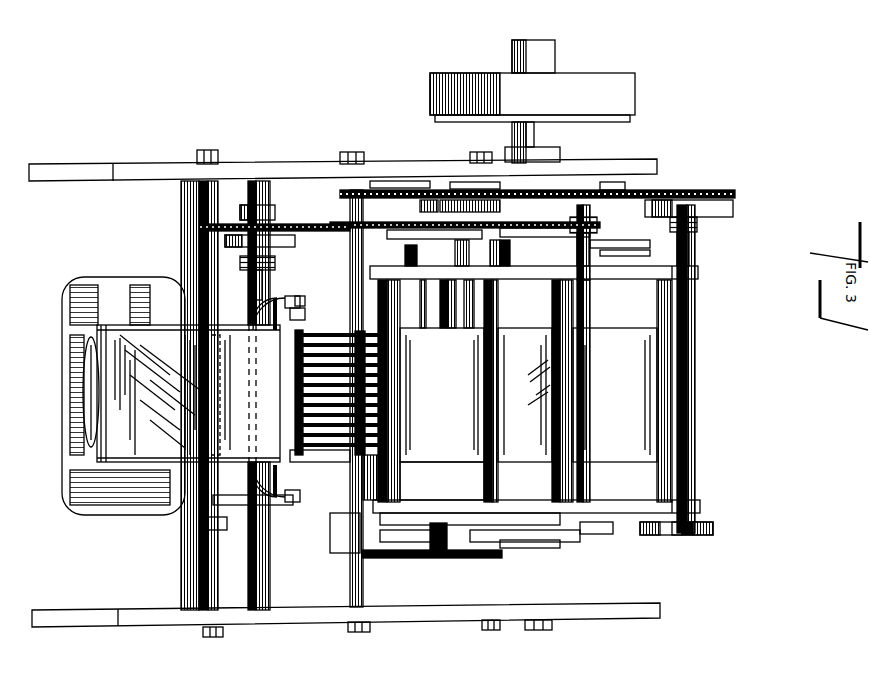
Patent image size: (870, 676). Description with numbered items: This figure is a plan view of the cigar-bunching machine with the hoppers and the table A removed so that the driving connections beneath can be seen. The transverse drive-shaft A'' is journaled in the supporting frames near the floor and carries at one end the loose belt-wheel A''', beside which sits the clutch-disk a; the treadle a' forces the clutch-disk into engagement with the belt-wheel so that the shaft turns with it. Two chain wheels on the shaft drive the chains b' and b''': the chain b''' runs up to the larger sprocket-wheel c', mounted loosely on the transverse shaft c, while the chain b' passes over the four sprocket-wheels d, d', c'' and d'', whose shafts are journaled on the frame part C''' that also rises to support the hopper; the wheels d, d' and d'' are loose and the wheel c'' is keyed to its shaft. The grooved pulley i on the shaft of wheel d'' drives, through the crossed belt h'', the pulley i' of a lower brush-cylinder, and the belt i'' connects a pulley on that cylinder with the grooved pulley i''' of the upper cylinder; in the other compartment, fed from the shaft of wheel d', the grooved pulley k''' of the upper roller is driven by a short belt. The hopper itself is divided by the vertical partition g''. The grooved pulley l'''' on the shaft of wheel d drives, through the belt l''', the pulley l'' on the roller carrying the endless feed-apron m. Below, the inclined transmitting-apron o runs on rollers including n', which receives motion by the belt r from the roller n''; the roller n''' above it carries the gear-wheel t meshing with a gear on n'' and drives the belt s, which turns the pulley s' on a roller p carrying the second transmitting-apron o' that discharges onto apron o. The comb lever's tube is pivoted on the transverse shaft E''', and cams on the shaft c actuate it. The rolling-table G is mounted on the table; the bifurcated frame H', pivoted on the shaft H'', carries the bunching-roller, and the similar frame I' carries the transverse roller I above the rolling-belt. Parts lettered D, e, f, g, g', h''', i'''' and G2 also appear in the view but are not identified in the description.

The table A is at (346, 624).
The transverse drive-shaft A'' is at (343, 364).
The loose belt-wheel A''' is at (532, 66).
The clutch-disk a is at (552, 132).
The treadle a' is at (123, 396).
The chain b' is at (527, 188).
The chain b''' is at (465, 237).
The transverse shaft c is at (267, 395).
The larger sprocket-wheel c' is at (275, 223).
The sprocket-wheel c'' is at (466, 170).
The frame part C''' is at (535, 389).
The sprocket-wheel d is at (537, 188).
The sprocket-wheel d' is at (521, 199).
The sprocket-wheel d'' is at (400, 159).
The gear wheel e is at (276, 263).
The spindle f is at (262, 283).
The pinion g is at (453, 236).
The arm g' is at (369, 477).
The vertical partition g'' is at (494, 258).
The belt or cord h'' is at (542, 233).
The lever arm h''' is at (441, 304).
The frame H' is at (286, 399).
The transverse shaft H'' is at (187, 395).
The grooved pulley i is at (343, 546).
The pulley i' is at (432, 568).
The belt i'' is at (470, 552).
The grooved pulley i''' is at (410, 555).
The block i'''' is at (505, 560).
The transverse roller I is at (306, 299).
The frame I' is at (320, 383).
The grooved pulley k''' is at (602, 542).
The pulley l'' is at (676, 543).
The belt or cord l''' is at (684, 544).
The grooved pulley l'''' is at (701, 543).
The endless feed-apron m is at (615, 395).
The roller n' is at (530, 555).
The roller n'' is at (434, 314).
The shaft or roller n''' is at (460, 314).
The transmitting-apron o is at (525, 395).
The transmitting-apron o' is at (442, 395).
The transverse rollers p is at (402, 472).
The belt r is at (625, 270).
The belt s is at (430, 206).
The pulley s' is at (418, 254).
The gear-wheel t is at (592, 270).
The comb D is at (335, 450).
The transverse shaft E''' is at (345, 398).
The rolling-table G is at (178, 345).
The inner plate G2 is at (210, 395).